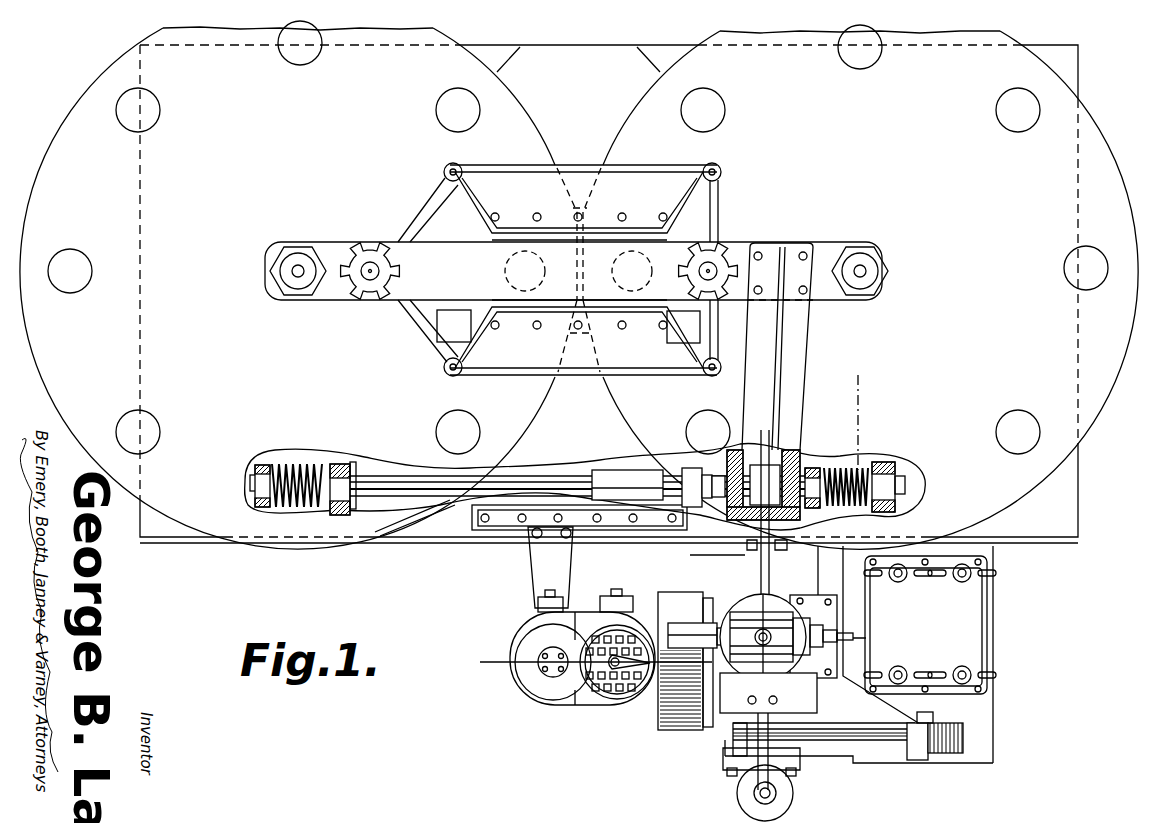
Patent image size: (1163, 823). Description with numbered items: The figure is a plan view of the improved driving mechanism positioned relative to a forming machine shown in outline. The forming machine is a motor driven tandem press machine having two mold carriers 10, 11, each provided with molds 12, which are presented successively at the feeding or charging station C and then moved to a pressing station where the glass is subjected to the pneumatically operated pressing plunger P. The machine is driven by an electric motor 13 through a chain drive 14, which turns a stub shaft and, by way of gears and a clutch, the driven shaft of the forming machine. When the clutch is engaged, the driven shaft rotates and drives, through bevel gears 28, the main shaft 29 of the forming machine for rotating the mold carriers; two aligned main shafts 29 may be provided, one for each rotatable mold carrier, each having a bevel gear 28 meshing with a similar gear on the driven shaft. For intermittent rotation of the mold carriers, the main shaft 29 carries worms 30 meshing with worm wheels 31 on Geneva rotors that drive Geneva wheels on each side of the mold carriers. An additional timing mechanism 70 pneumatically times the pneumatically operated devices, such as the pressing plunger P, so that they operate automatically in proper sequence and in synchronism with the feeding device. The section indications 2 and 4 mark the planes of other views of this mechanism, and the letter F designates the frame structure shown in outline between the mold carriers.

The mold carrier 10 is at (75, 133).
The mold carrier 11 is at (1101, 160).
The molds 12 is at (283, 57).
The electric motor 13 is at (968, 638).
The chain drive 14 is at (886, 750).
The bevel gears 28 is at (745, 470).
The main shaft 29 is at (545, 490).
The worms 30 is at (300, 498).
The worm wheels 31 is at (290, 478).
The timing mechanism 70 is at (620, 690).
The section line 2- 2 is at (868, 399).
The section line 4- 4 is at (488, 648).
The feeding or charging station C is at (453, 90).
The frame F is at (643, 127).
The pressing plunger P is at (636, 250).